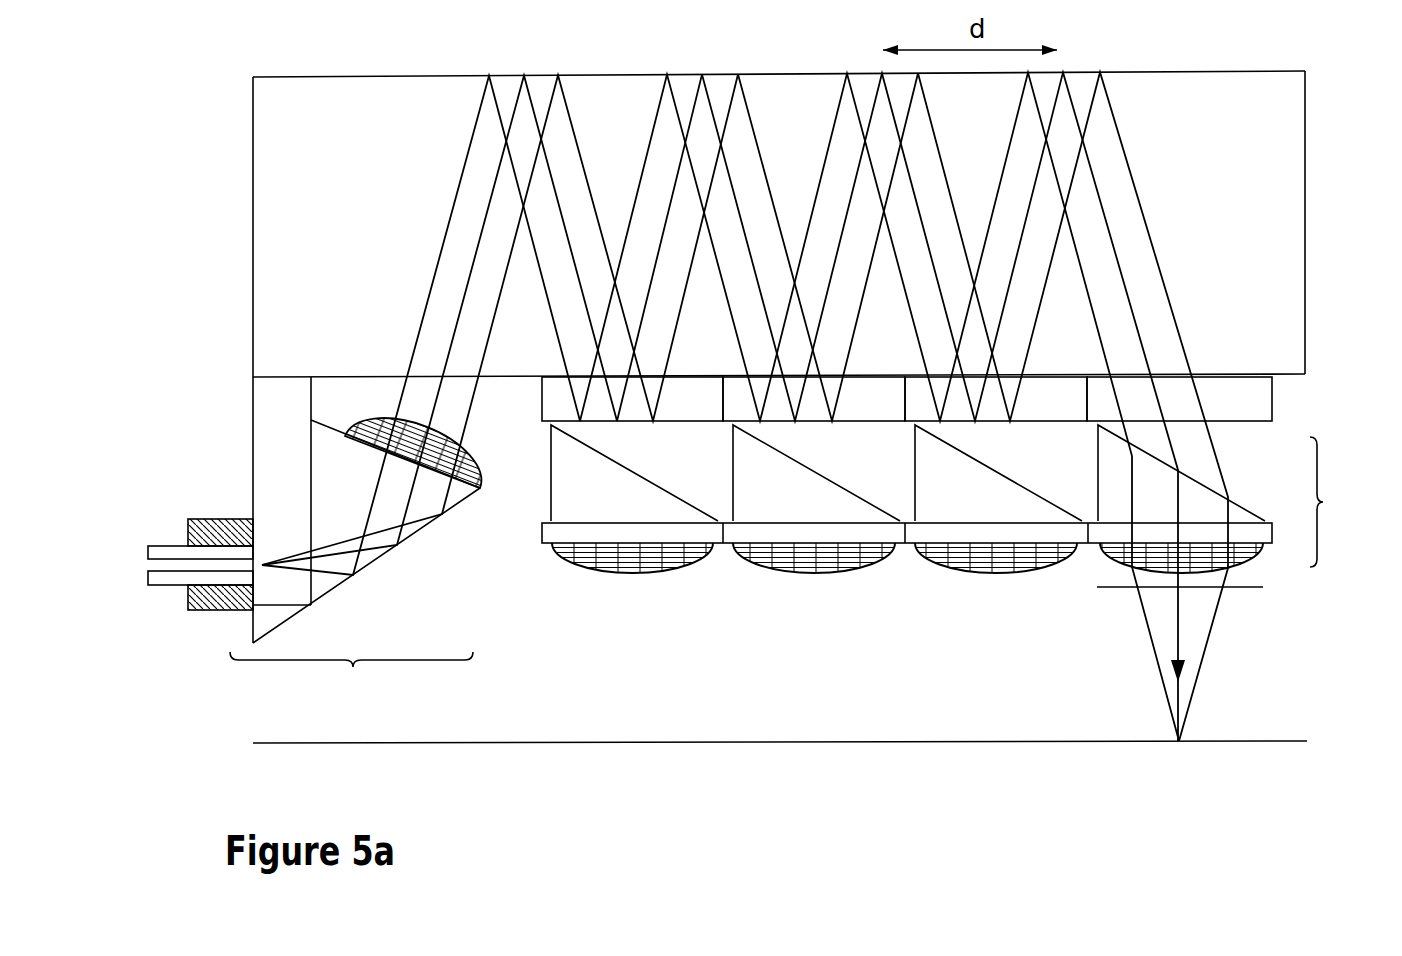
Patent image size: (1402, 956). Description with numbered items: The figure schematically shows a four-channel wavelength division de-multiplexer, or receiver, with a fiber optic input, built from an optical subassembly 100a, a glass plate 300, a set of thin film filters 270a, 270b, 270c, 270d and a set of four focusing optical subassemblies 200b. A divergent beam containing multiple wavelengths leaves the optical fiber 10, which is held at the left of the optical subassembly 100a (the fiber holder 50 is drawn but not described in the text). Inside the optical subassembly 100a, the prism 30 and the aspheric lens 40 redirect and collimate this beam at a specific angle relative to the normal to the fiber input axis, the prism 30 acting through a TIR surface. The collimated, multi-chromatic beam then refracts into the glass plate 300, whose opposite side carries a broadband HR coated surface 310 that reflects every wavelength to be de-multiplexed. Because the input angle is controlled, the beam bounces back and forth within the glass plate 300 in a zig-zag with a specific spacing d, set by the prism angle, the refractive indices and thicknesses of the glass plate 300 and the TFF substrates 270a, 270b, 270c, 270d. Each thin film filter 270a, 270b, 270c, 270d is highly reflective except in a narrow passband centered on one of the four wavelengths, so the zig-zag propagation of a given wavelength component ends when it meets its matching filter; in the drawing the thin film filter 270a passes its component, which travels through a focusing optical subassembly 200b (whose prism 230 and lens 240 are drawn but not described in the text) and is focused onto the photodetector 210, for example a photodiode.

The optical fiber 10 is at (160, 545).
The fiber ferrule / holder 50 is at (227, 603).
The prism 30 is at (430, 505).
The aspheric lens 40 is at (375, 423).
The optical subassembly 100a is at (351, 678).
The glass plate 300 is at (290, 237).
The HR coated surface 310 is at (543, 80).
The thin film filter 270a is at (1179, 399).
The thin film filter 270b is at (996, 399).
The thin film filter 270c is at (814, 399).
The thin film filter 270d is at (632, 399).
The output prism 230 is at (1181, 473).
The focusing lens 240 is at (1125, 555).
The photodetector 210 is at (780, 767).
The focusing optical subassembly 200b is at (1346, 502).